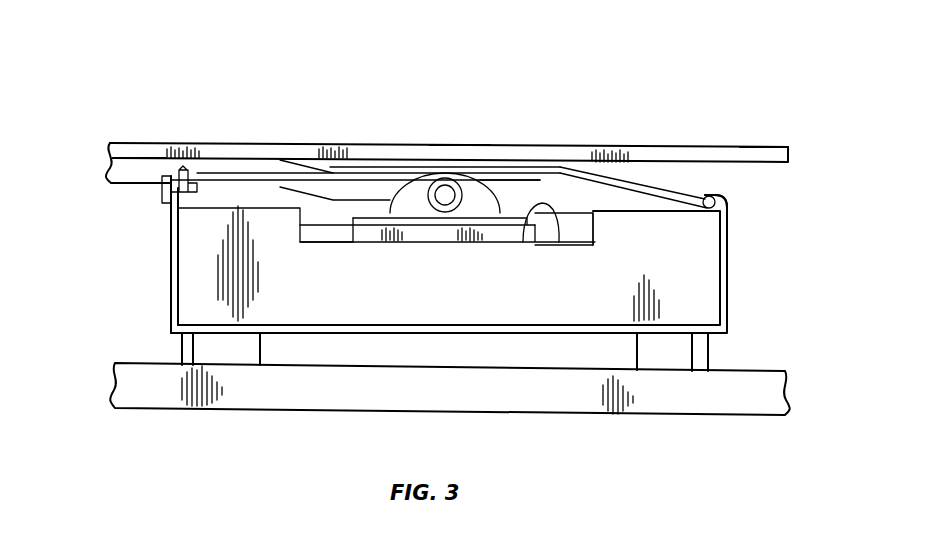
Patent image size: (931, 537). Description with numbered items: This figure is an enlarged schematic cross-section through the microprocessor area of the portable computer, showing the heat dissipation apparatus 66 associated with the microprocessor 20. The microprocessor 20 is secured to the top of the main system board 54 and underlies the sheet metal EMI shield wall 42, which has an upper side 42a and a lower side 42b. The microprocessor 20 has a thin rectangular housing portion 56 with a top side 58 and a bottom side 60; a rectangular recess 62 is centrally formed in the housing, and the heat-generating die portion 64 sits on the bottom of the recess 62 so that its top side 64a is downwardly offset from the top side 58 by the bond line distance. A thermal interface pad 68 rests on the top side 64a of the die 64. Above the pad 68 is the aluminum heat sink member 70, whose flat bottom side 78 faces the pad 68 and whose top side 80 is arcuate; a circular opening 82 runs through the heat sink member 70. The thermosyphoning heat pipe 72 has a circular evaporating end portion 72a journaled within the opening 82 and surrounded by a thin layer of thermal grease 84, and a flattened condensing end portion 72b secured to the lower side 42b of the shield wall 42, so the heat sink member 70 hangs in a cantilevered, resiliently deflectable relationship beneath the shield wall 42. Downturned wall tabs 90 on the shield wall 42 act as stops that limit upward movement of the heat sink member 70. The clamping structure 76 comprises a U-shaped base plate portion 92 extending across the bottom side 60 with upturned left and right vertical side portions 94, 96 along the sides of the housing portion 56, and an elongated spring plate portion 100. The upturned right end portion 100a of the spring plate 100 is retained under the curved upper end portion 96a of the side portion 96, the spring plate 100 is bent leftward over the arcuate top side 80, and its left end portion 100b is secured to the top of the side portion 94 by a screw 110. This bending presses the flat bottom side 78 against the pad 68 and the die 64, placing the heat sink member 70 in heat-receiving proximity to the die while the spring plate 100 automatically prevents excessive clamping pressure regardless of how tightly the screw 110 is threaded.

The microprocessor 20 is at (700, 281).
The EMI shield wall 42 is at (803, 142).
The upper side of shield wall 42a is at (726, 146).
The lower side of shield wall 42b is at (110, 185).
The main system board 54 is at (716, 395).
The housing portion 56 is at (458, 260).
The top side of housing portion 58 is at (247, 208).
The bottom side of housing portion 60 is at (520, 333).
The recess 62 is at (590, 224).
The die portion 64 is at (497, 240).
The top side of die 64a is at (558, 242).
The heat dissipation apparatus 66 is at (463, 112).
The thermal interface pad 68 is at (360, 242).
The heat sink member 70 is at (492, 197).
The thermosyphoning heat pipe 72 is at (152, 150).
The evaporating end portion of heat pipe 72a is at (430, 228).
The condensing end portion of heat pipe 72b is at (272, 163).
The clamping structure 76 is at (760, 305).
The flat bottom side of heat sink member 78 is at (405, 242).
The arcuate top side of heat sink member 80 is at (501, 172).
The circular opening 82 is at (414, 178).
The thermal grease 84 is at (445, 195).
The downturned wall tabs 90 is at (397, 185).
The base plate portion 92 is at (425, 334).
The left vertical side portion 94 is at (167, 293).
The right vertical side portion 96 is at (727, 243).
The curved upper end portion 96a is at (718, 195).
The spring plate portion 100 is at (635, 183).
The upturned right end portion of spring plate 100a is at (705, 210).
The left end portion of spring plate 100b is at (162, 195).
The screw 110 is at (183, 168).